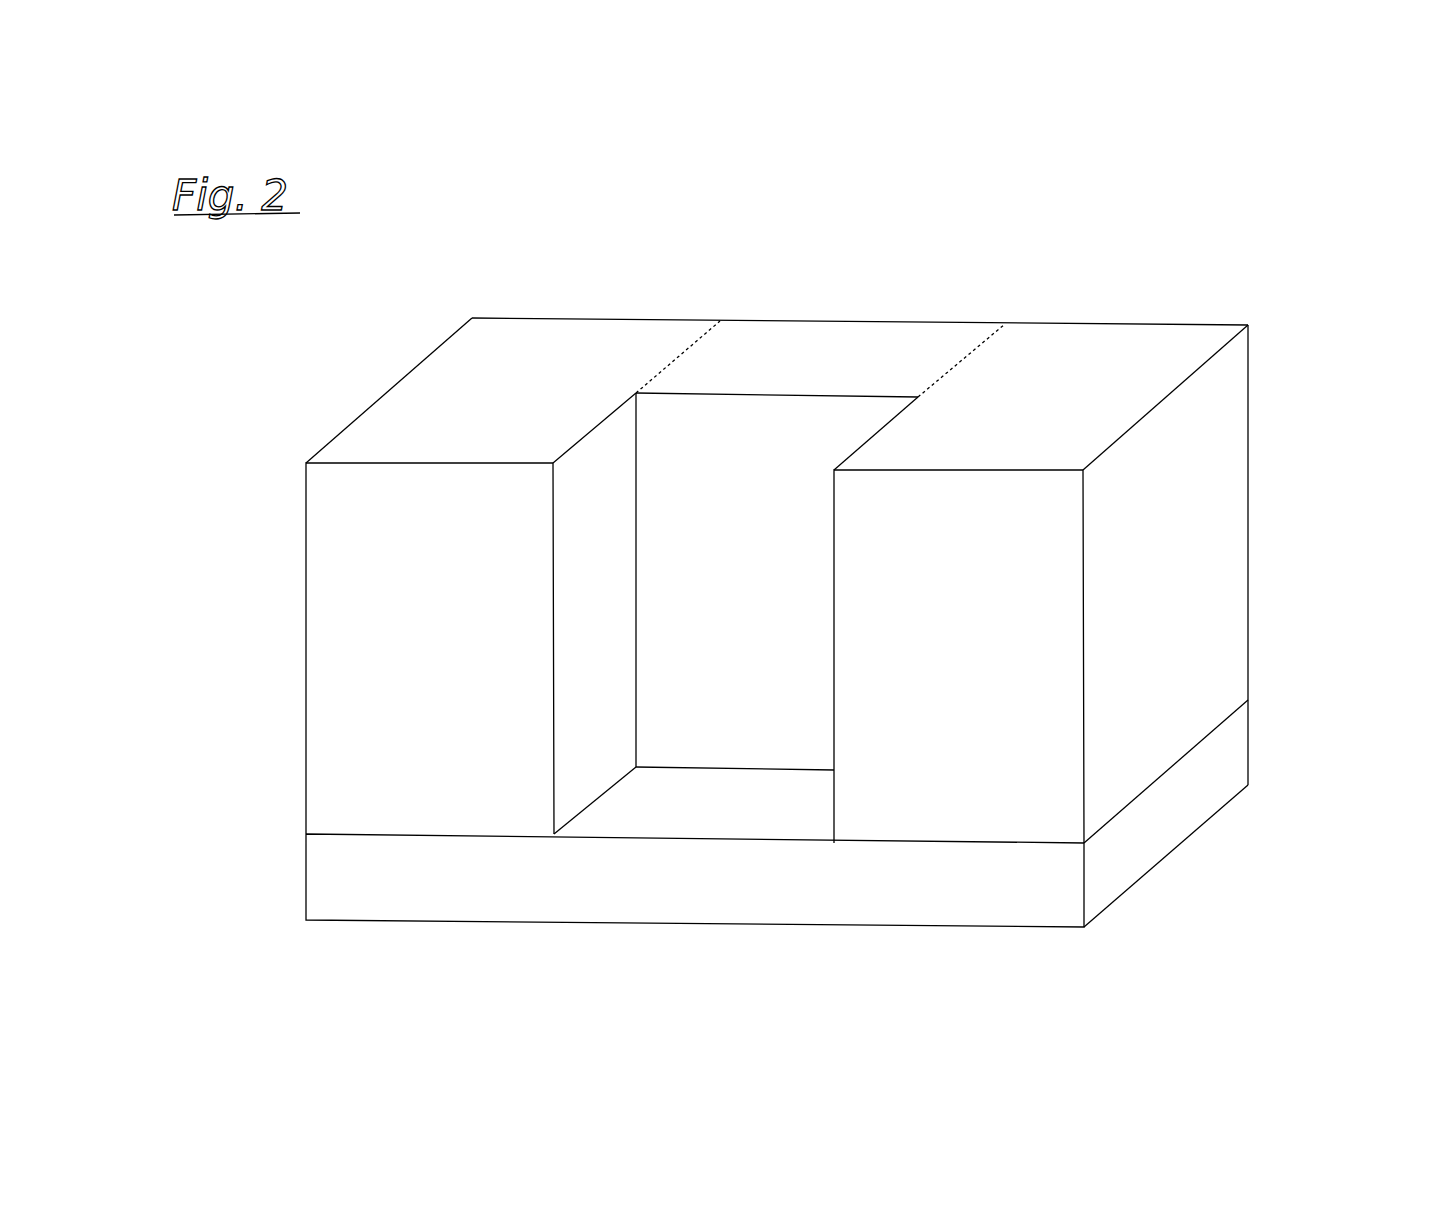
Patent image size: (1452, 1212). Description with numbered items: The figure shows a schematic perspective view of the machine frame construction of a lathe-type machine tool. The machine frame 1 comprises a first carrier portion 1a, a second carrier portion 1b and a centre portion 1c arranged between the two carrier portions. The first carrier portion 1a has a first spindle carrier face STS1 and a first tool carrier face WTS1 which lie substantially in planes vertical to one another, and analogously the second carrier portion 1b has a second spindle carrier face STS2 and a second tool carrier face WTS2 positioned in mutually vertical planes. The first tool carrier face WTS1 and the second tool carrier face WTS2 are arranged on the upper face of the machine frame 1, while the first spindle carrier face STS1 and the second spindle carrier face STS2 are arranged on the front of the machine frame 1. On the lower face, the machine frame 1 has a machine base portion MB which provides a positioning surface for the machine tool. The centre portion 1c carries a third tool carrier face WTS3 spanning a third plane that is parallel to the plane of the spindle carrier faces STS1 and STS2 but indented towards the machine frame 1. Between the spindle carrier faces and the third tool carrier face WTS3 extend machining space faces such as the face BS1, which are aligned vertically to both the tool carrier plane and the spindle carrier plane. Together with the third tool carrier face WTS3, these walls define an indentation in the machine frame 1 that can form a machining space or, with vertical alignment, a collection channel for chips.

The machine frame 1 is at (1310, 333).
The first carrier portion 1a is at (528, 368).
The second carrier portion 1b is at (1060, 373).
The centre portion 1c is at (795, 360).
The first tool carrier face WTS1 is at (427, 404).
The second tool carrier face WTS2 is at (1057, 426).
The third tool carrier face WTS3 is at (766, 705).
The first spindle carrier face STS1 is at (337, 660).
The second spindle carrier face STS2 is at (1040, 595).
The machining space face BS1 is at (575, 773).
The machine base portion MB is at (1138, 835).